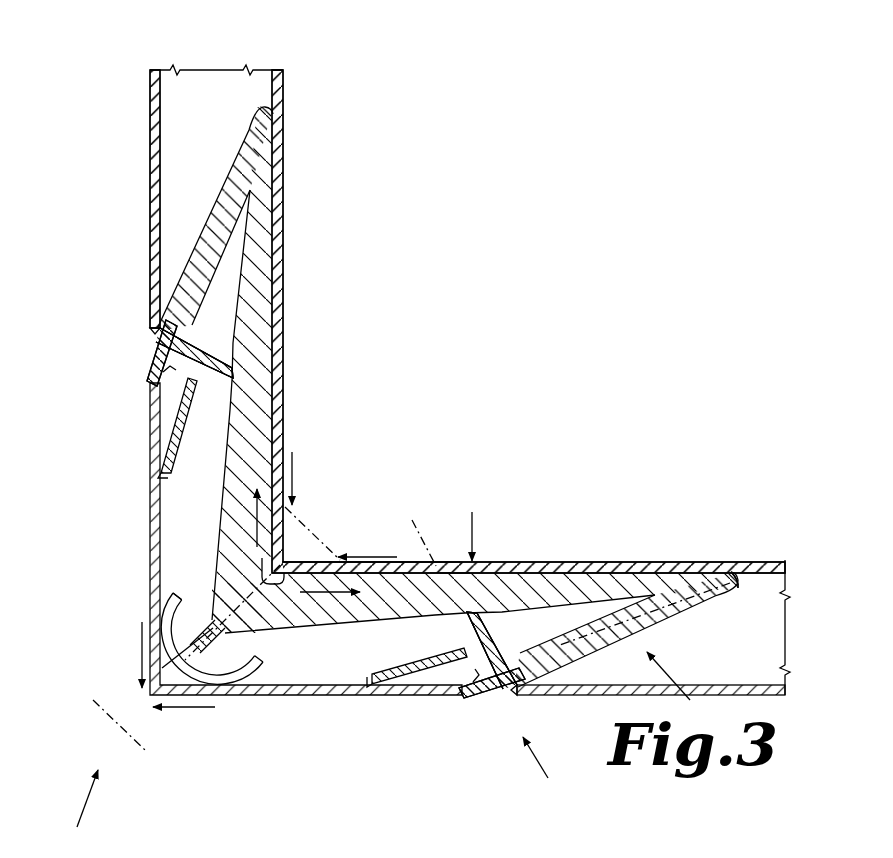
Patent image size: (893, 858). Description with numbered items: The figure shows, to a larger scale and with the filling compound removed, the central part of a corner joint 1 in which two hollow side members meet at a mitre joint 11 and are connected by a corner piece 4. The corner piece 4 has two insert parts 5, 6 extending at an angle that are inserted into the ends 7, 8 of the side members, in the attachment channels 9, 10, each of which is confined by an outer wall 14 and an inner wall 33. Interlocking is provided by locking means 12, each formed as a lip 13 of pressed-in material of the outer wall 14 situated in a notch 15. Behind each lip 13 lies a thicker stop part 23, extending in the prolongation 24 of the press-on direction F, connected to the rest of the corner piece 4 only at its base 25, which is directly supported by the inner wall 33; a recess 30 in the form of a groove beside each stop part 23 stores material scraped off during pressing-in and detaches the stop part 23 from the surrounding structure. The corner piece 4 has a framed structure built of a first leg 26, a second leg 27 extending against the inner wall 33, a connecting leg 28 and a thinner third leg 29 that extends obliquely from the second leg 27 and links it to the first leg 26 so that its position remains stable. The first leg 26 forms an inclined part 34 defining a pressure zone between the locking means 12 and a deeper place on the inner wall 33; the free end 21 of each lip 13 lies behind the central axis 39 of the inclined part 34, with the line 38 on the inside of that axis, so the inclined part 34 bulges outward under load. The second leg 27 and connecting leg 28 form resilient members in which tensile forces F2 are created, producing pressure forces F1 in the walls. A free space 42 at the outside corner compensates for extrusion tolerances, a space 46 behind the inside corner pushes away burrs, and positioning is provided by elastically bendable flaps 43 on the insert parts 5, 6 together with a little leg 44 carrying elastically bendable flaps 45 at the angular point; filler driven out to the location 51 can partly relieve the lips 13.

The corner joint 1 is at (77, 814).
The corner piece 4 is at (677, 689).
The insert part 5 is at (471, 522).
The insert part 6 is at (285, 378).
The end of side member 7 is at (280, 655).
The end of side member 8 is at (170, 592).
The attachment channel 9 is at (790, 634).
The attachment channel 10 is at (210, 88).
The mitre joint 11 is at (125, 722).
The locking means 12 is at (146, 346).
The lip 13 is at (160, 360).
The outer wall 14 is at (154, 72).
The notch 15 is at (155, 342).
The free end 21 is at (195, 325).
The stop part 23 is at (160, 386).
The prolongation of the press-on direction 24 is at (423, 540).
The base 25 is at (455, 563).
The first leg 26 is at (230, 187).
The second leg 27 is at (270, 190).
The connecting leg 28 is at (230, 527).
The third leg 29 is at (230, 335).
The recess 30 is at (262, 356).
The inner wall 33 is at (278, 73).
The inclined part 34 is at (670, 618).
The line 38 is at (712, 580).
The central axis 39 is at (735, 577).
The free space 42 is at (160, 597).
The elastically bendable flap 43 is at (160, 463).
The little leg 44 is at (162, 668).
The elastically bendable flap 45 is at (170, 598).
The space 46 is at (410, 563).
The filler location 51 is at (156, 262).
The press-on direction F is at (544, 778).
The pressure force F1 is at (140, 656).
The tensile force F2 is at (222, 537).